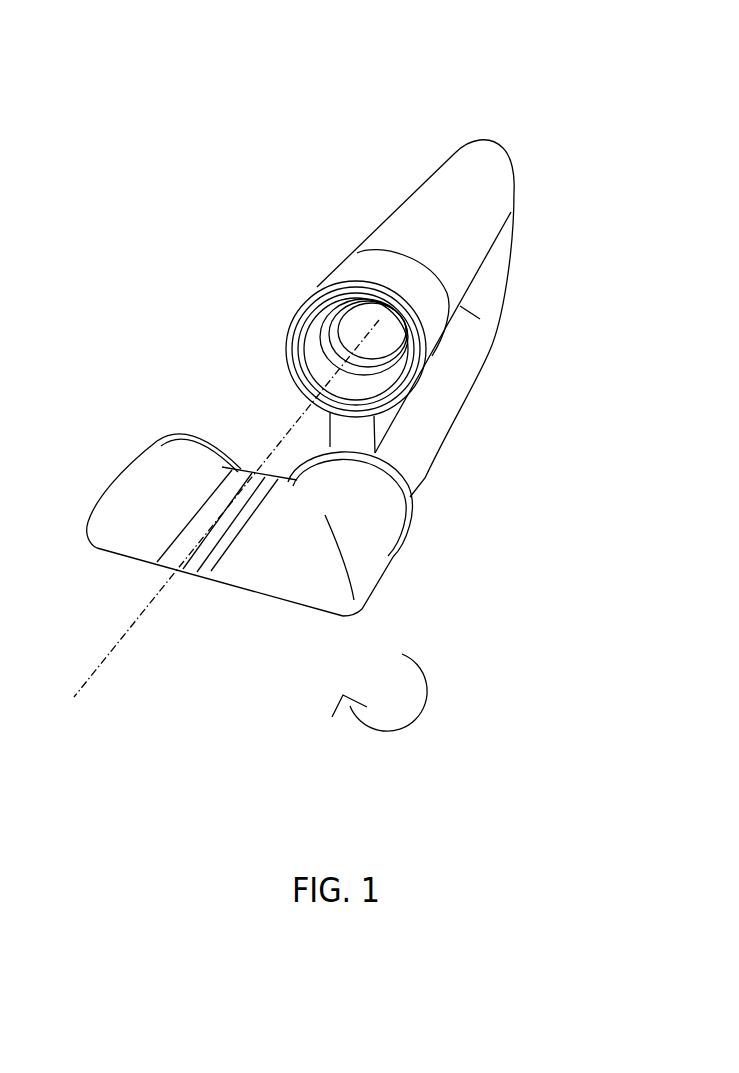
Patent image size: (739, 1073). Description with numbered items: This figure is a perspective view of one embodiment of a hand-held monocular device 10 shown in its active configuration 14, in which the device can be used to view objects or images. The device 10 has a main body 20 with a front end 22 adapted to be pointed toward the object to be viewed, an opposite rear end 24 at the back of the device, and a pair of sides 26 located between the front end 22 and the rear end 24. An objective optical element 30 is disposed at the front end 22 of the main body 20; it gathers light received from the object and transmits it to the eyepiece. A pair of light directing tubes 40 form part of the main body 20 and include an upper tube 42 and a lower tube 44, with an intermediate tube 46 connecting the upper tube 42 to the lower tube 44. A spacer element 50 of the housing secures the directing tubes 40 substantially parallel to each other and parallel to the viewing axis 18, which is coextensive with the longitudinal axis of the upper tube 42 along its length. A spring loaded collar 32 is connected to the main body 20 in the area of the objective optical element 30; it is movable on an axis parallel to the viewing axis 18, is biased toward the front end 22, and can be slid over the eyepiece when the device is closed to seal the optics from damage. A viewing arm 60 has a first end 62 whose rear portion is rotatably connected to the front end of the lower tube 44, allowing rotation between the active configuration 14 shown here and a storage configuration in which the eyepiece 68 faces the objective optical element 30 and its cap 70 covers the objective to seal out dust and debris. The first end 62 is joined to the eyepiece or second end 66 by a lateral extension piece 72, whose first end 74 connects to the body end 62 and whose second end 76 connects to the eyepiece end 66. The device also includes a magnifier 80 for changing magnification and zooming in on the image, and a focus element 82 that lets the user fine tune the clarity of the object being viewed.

The hand-held monocular device 10 is at (245, 122).
The active configuration 14 is at (319, 384).
The viewing axis 18 is at (117, 652).
The main body 20 is at (420, 165).
The front end 22 is at (449, 508).
The rear end 24 is at (509, 246).
The sides 26 is at (456, 423).
The objective optical element 30 is at (344, 325).
The spring loaded collar 32 is at (322, 282).
The light directing tubes 40 is at (467, 165).
The upper tube 42 is at (487, 280).
The lower tube 44 is at (487, 344).
The intermediate tube 46 is at (505, 288).
The spacer element 50 is at (384, 432).
The viewing arm 60 is at (263, 685).
The first end 62 is at (387, 560).
The second end 66 is at (105, 488).
The eyepiece 68 is at (157, 440).
The cap 70 is at (185, 430).
The lateral extension piece 72 is at (184, 578).
The first end of lateral extension piece 74 is at (320, 614).
The second end of lateral extension piece 76 is at (97, 549).
The magnifier 80 is at (157, 567).
The focus element 82 is at (208, 574).